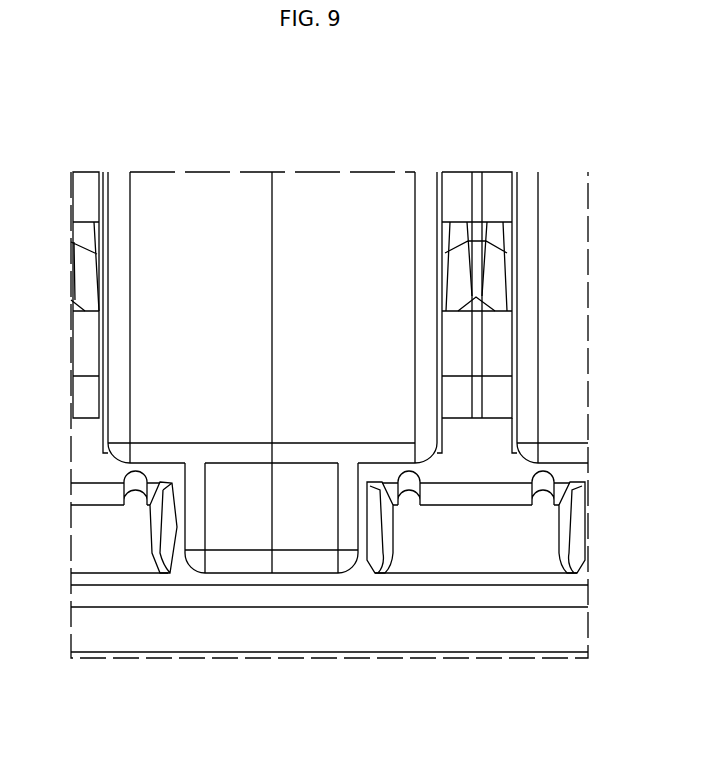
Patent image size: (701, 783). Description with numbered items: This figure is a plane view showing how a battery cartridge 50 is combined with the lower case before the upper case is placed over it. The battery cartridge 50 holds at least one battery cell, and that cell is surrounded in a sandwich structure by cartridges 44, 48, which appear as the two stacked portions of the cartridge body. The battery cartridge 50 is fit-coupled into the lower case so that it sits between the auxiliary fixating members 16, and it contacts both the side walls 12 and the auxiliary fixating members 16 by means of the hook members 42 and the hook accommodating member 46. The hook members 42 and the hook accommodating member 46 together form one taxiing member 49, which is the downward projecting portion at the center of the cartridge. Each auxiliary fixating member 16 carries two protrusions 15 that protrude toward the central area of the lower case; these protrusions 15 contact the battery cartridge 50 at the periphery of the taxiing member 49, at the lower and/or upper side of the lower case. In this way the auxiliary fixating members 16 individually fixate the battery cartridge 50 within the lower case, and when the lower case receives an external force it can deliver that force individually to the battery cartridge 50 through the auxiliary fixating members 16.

The side wall 12 is at (503, 636).
The protrusion 15 is at (410, 485).
The auxiliary fixating member 16 is at (100, 543).
The hook member 42 is at (233, 542).
The cartridge 44 is at (210, 184).
The hook accommodating member 46 is at (315, 542).
The cartridge 48 is at (415, 267).
The taxiing member 49 is at (271, 607).
The battery cartridge 50 is at (329, 324).